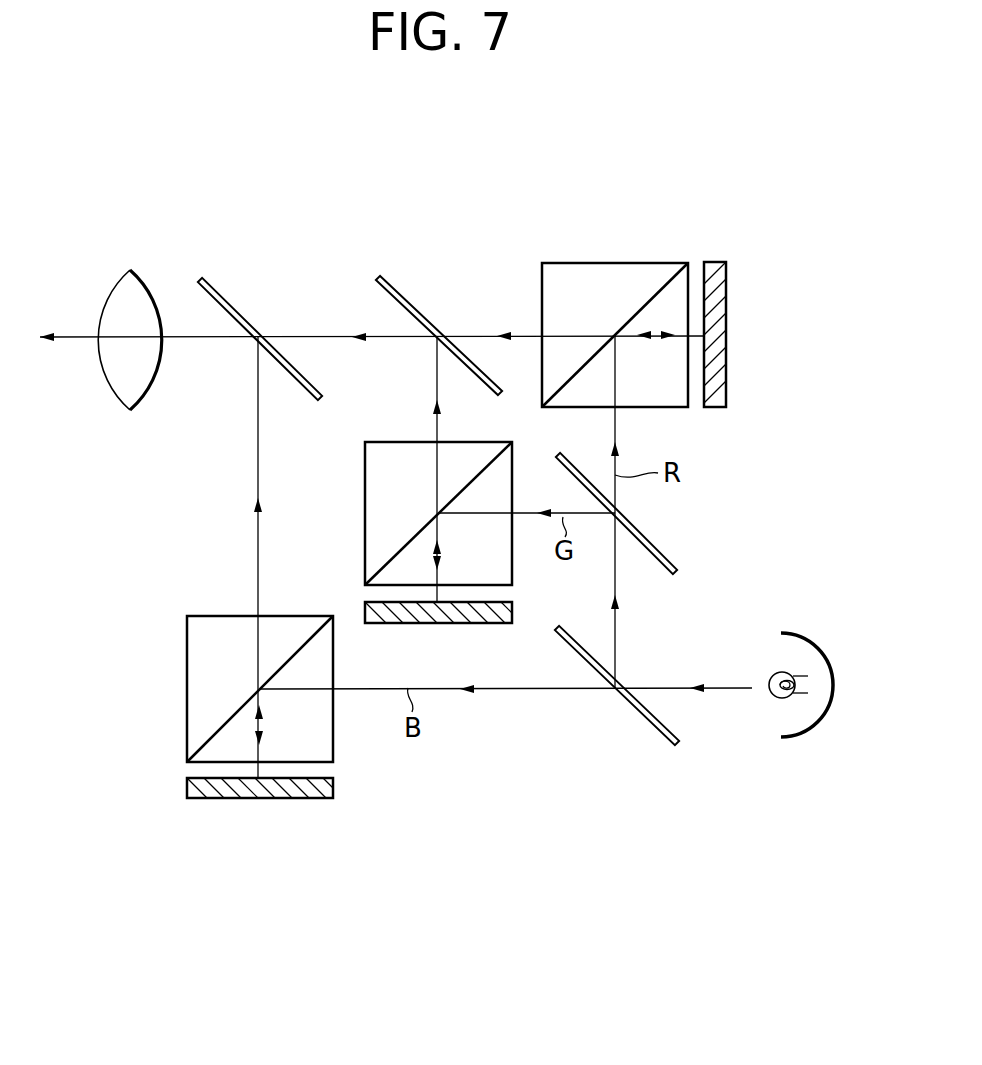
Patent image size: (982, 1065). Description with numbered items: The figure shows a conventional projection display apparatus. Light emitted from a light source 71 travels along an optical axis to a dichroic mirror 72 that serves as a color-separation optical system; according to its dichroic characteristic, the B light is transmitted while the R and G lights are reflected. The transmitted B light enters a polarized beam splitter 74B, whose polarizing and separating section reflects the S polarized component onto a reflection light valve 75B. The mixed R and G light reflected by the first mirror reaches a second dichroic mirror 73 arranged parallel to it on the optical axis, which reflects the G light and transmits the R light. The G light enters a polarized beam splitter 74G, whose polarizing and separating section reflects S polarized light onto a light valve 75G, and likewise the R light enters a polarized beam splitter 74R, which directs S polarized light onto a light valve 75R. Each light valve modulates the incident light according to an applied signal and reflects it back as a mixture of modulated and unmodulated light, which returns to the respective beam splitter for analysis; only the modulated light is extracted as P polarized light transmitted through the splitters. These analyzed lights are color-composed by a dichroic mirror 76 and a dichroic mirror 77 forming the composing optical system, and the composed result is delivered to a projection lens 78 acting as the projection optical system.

The light source 71 is at (815, 642).
The dichroic mirror 72 is at (637, 713).
The dichroic mirror 73 is at (655, 558).
The polarized beam splitter for the R light 74R is at (582, 277).
The polarized beam splitter for the G light 74G is at (370, 462).
The polarized beam splitter for the B light 74B is at (198, 667).
The light valve for the R light 75R is at (728, 295).
The light valve for the G light 75G is at (422, 623).
The reflection light valve for the B light 75B is at (300, 797).
The dichroic mirror 76 is at (405, 297).
The dichroic mirror 77 is at (227, 297).
The projection lens 78 is at (130, 290).